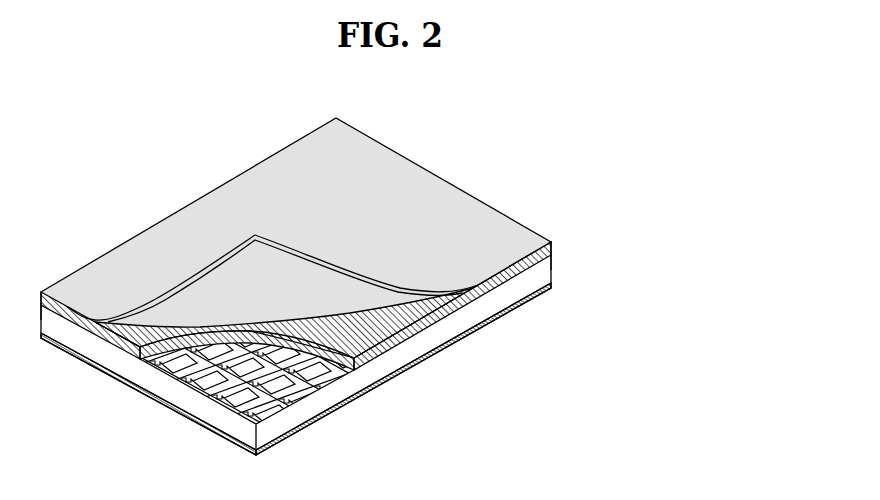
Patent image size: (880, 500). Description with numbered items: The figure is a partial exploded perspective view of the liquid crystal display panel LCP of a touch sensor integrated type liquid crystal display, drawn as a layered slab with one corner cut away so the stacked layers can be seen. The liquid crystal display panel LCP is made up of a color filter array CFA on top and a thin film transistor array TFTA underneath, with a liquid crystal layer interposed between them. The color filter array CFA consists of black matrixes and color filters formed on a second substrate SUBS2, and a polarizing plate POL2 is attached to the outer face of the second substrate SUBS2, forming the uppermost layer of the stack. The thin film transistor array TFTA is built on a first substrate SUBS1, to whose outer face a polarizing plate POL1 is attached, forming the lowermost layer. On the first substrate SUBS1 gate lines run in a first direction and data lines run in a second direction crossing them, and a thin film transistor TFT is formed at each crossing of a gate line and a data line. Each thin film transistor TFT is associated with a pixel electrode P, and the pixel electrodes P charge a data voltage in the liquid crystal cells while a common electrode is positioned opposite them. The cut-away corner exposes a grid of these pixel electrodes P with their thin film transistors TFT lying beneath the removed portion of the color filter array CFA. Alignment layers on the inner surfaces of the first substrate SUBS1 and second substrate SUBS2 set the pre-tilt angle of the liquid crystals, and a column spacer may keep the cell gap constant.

The liquid crystal display panel LCP is at (391, 303).
The color filter array CFA is at (362, 244).
The thin film transistor array TFTA is at (367, 364).
The polarizing plate POL2 is at (552, 244).
The second substrate SUBS2 is at (549, 256).
The first substrate SUBS1 is at (546, 273).
The polarizing plate POL1 is at (549, 290).
The thin film transistor TFT is at (171, 386).
The pixel electrode P is at (257, 416).